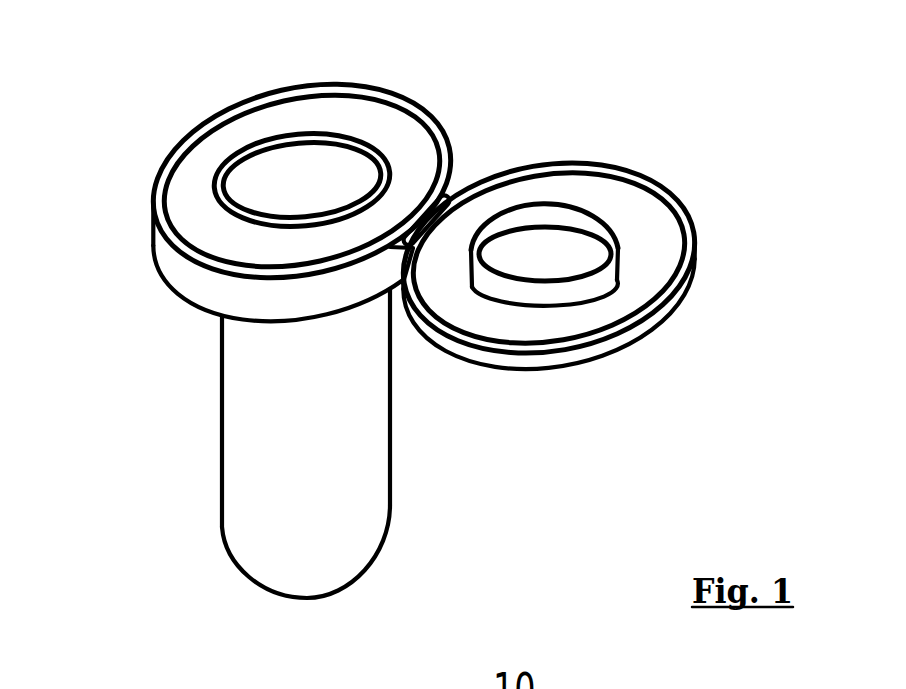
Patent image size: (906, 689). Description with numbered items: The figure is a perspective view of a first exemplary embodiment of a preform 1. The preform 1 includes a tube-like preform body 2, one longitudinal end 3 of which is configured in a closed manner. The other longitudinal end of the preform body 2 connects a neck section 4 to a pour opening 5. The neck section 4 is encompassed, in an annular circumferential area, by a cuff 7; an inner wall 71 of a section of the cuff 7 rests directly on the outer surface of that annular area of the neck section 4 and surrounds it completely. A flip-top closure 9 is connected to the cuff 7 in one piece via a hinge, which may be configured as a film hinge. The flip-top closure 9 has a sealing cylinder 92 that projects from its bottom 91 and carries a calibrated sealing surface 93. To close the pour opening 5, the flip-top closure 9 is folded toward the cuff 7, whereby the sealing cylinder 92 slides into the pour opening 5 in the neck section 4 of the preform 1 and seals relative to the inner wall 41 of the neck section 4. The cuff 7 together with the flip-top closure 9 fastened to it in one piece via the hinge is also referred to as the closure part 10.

The preform 1 is at (262, 314).
The preform body 2 is at (397, 473).
The longitudinal end 3 is at (293, 600).
The neck section 4 is at (378, 145).
The inner wall of the neck section 41 is at (308, 158).
The pour opening 5 is at (313, 123).
The cuff 7 is at (262, 189).
The inner wall of the cuff 71 is at (192, 205).
The flip-top closure 9 is at (658, 181).
The bottom of the flip-top closure 91 is at (657, 238).
The sealing cylinder 92 is at (614, 264).
The sealing surface 93 is at (543, 293).
The closure part 10 is at (578, 235).